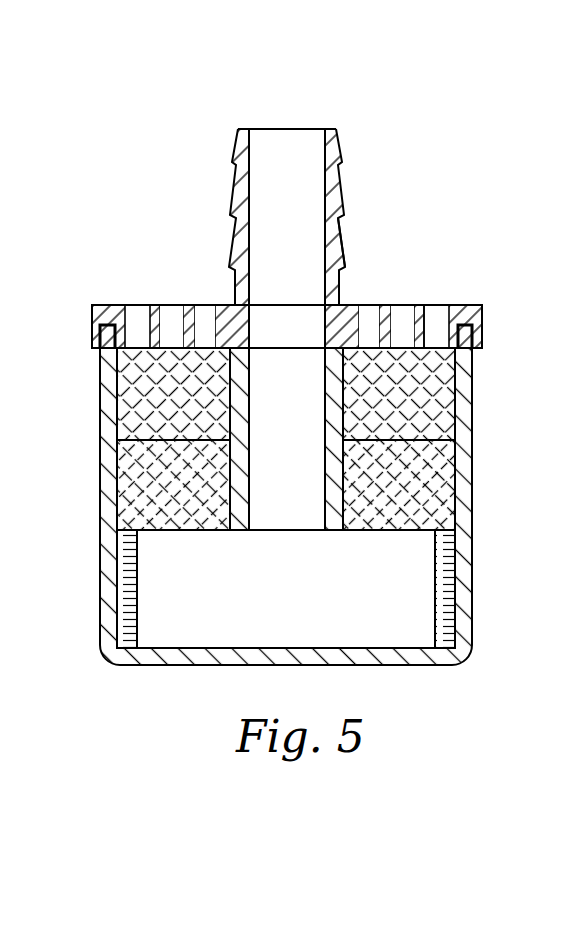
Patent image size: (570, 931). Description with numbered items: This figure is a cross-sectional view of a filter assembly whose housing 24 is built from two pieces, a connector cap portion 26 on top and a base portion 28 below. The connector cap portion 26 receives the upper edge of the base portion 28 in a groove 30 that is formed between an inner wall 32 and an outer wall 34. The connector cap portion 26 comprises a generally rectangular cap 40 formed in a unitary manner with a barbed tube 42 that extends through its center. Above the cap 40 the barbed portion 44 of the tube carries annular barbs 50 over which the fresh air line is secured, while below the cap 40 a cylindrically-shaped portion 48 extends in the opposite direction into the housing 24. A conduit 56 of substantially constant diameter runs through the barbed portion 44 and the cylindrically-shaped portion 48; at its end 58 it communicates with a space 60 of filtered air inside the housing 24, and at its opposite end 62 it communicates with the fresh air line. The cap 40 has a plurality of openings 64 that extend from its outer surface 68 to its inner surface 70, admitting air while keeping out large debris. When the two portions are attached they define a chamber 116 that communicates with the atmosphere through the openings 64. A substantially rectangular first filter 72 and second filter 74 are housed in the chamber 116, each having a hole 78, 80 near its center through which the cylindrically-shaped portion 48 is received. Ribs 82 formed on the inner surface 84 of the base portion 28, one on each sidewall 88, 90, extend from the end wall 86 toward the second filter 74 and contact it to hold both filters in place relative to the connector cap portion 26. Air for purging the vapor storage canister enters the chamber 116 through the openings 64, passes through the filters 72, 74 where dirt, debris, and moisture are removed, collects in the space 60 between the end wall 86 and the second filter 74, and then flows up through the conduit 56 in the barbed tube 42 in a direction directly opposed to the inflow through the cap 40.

The housing 24 is at (487, 335).
The connector cap portion 26 is at (463, 305).
The base portion 28 is at (470, 410).
The groove 30 is at (478, 327).
The inner wall 32 is at (440, 320).
The outer wall 34 is at (478, 347).
The cap 40 is at (141, 304).
The barbed tube 42 is at (345, 157).
The barbed portion 44 is at (342, 231).
The cylindrically-shaped portion 48 is at (237, 530).
The barbs 50 is at (232, 162).
The conduit 56 is at (301, 437).
The end 58 is at (340, 532).
The space 60 is at (301, 613).
The opposite end 62 is at (332, 128).
The openings 64 is at (207, 318).
The outer surface 68 is at (98, 304).
The inner surface 70 is at (140, 360).
The first filter 72 is at (405, 398).
The second filter 74 is at (410, 495).
The hole 78 is at (335, 398).
The hole 80 is at (335, 512).
The ribs 82 is at (128, 583).
The inner surface 84 is at (442, 593).
The end wall 86 is at (358, 657).
The sidewall 88 is at (468, 610).
The sidewall 90 is at (110, 617).
The chamber 116 is at (458, 465).